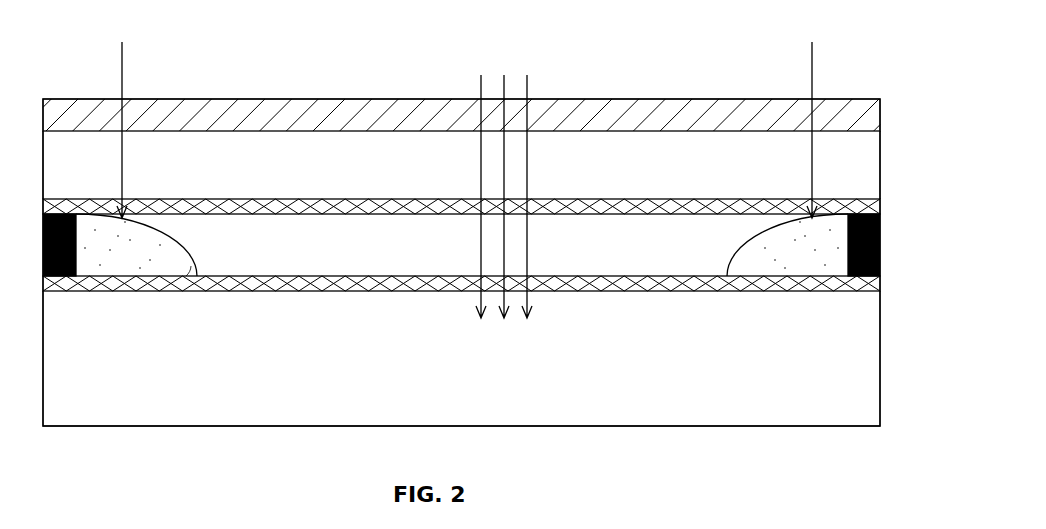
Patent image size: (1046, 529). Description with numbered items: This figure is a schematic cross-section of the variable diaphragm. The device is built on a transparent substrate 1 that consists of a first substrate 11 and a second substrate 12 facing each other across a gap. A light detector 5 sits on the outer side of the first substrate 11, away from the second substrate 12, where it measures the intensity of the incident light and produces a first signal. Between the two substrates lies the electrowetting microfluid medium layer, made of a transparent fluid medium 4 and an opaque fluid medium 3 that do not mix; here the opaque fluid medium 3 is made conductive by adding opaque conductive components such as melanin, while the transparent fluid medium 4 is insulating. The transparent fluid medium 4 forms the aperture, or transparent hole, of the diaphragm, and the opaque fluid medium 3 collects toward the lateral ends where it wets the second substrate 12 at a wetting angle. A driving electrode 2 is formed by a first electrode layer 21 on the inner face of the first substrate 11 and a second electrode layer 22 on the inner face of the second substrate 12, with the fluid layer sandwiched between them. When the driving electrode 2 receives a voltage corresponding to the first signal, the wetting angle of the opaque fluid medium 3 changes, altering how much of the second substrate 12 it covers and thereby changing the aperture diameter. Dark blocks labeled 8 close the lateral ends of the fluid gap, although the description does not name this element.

The substrate 1 is at (880, 345).
The first substrate 11 is at (863, 178).
The second substrate 12 is at (865, 397).
The first electrode layer 21 is at (730, 203).
The second electrode layer 22 is at (855, 292).
The driving electrode 2 is at (710, 290).
The opaque fluid medium 3 is at (168, 292).
The transparent fluid medium 4 is at (441, 243).
The light detector 5 is at (410, 110).
The sealant 8 is at (880, 238).